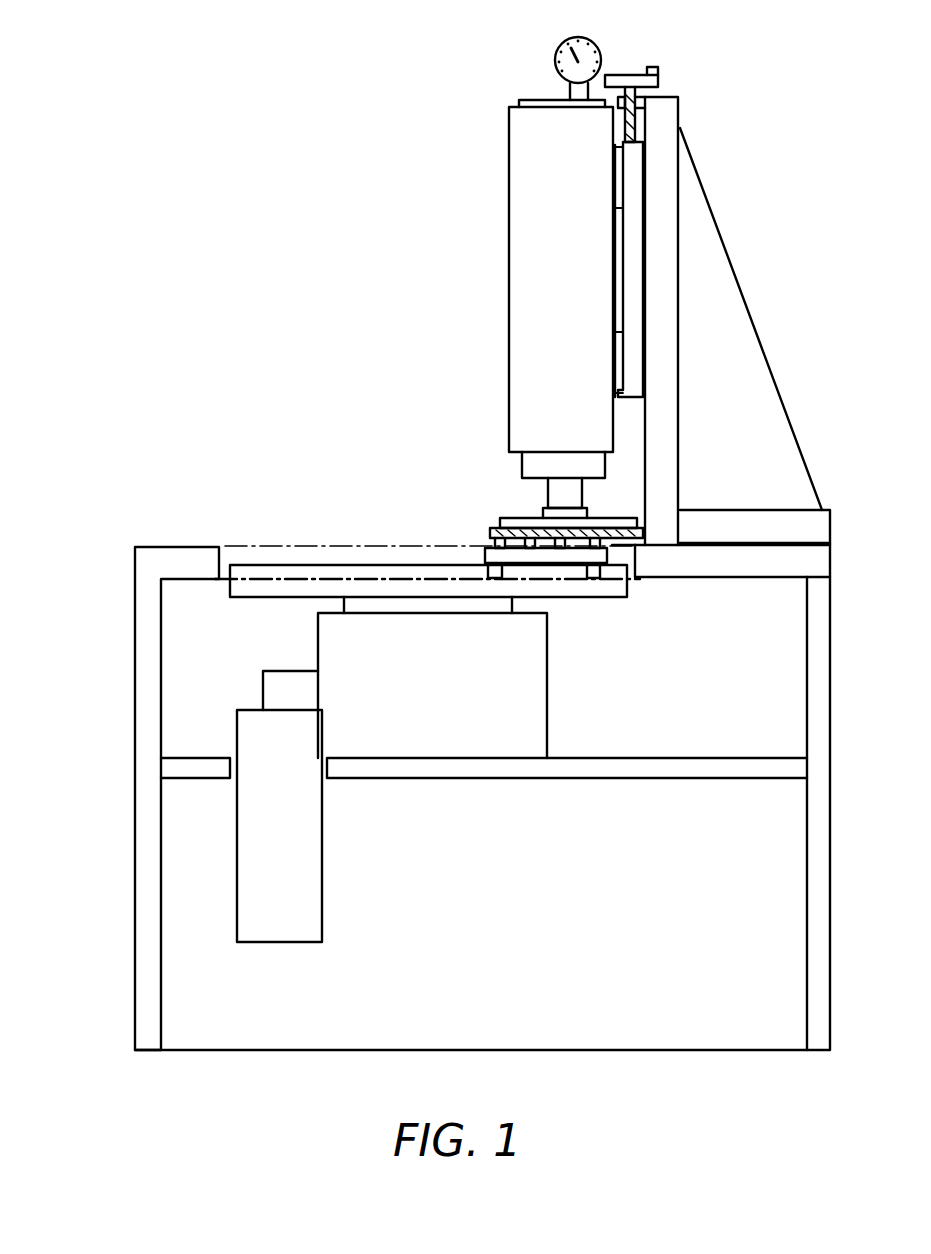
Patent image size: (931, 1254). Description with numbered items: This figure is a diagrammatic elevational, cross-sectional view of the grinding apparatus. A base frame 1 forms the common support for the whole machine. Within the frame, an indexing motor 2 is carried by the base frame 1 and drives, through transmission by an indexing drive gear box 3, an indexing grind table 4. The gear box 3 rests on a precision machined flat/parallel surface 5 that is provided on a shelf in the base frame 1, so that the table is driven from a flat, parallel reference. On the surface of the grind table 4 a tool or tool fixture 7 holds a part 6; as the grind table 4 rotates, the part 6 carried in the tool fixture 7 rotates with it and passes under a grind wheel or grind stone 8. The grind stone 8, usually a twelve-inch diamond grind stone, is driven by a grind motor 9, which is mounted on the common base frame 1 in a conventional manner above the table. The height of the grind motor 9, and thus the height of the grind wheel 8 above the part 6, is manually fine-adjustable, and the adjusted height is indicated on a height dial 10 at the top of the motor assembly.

The base frame 1 is at (137, 940).
The indexing motor 2 is at (298, 877).
The indexing drive gear box 3 is at (535, 672).
The indexing grind table 4 is at (325, 566).
The precision machined flat/parallel surface 5 is at (465, 757).
The part 6 is at (490, 546).
The tool fixture 7 is at (483, 555).
The grind stone 8 is at (518, 518).
The grind motor 9 is at (509, 222).
The height dial 10 is at (556, 56).